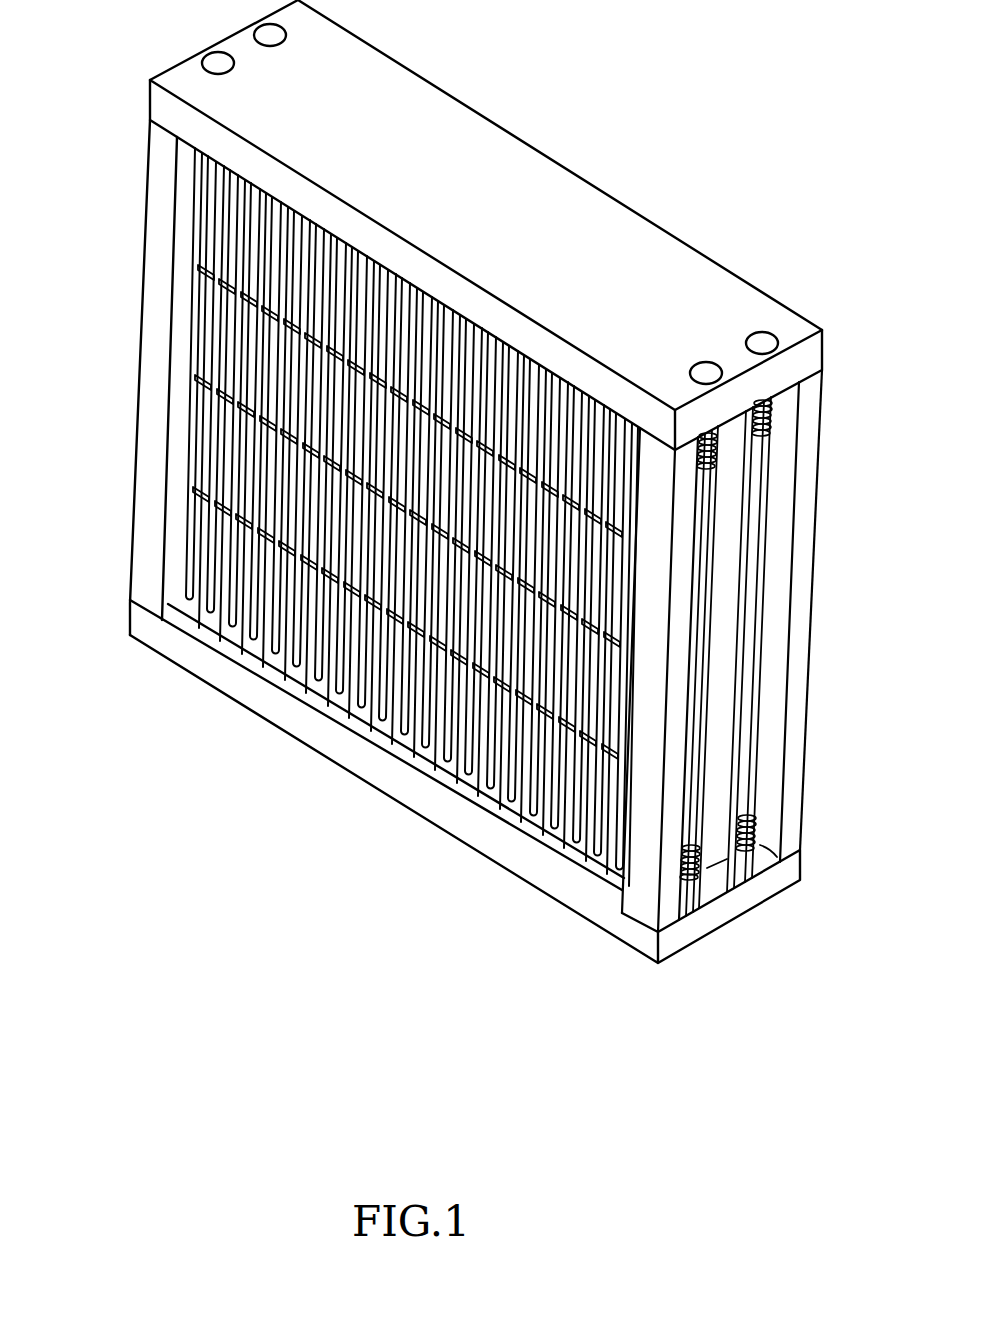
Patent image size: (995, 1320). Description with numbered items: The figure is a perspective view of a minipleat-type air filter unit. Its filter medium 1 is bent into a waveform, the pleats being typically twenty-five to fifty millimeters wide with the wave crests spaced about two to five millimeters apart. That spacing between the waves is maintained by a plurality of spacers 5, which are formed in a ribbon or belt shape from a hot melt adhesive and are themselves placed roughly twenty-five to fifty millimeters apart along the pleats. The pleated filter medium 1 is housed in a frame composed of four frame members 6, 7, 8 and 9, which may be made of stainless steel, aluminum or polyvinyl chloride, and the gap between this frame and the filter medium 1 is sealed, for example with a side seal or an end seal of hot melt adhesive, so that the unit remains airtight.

The filter medium 1 is at (225, 227).
The spacers 5 is at (195, 383).
The frame member 6 is at (604, 185).
The frame member 7 is at (728, 655).
The frame member 8 is at (404, 793).
The frame member 9 is at (146, 504).